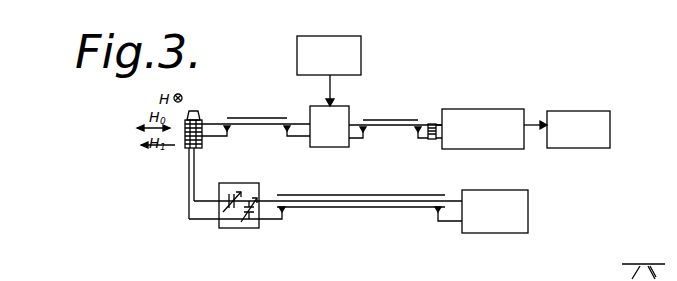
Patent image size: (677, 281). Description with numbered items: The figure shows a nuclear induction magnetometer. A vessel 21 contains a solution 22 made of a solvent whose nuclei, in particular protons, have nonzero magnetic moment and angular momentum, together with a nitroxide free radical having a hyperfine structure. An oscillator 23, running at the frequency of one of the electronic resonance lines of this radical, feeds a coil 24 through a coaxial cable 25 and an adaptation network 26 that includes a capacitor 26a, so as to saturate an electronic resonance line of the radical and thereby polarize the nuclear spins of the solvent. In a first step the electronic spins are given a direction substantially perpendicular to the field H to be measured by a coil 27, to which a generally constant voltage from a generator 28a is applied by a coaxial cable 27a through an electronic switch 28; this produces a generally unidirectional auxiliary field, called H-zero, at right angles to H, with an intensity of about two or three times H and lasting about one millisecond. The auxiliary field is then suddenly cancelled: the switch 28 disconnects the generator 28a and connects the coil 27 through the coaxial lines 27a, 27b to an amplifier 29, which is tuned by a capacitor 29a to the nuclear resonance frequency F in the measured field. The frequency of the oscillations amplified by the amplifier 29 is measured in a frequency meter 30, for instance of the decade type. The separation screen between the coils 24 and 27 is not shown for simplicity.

The vessel 21 is at (196, 118).
The solution 22 is at (199, 143).
The coil 24 is at (186, 139).
The coil 27 is at (203, 122).
The coaxial cable 27a is at (266, 116).
The coaxial line 27b is at (390, 120).
The electronic switch 28 is at (339, 113).
The generator 28a is at (362, 60).
The amplifier 29 is at (473, 109).
The capacitor 29a is at (427, 134).
The frequency meter 30 is at (577, 111).
The adaptation network 26 is at (261, 179).
The capacitor 26a is at (247, 213).
The coaxial cable 25 is at (343, 208).
The oscillator 23 is at (530, 218).